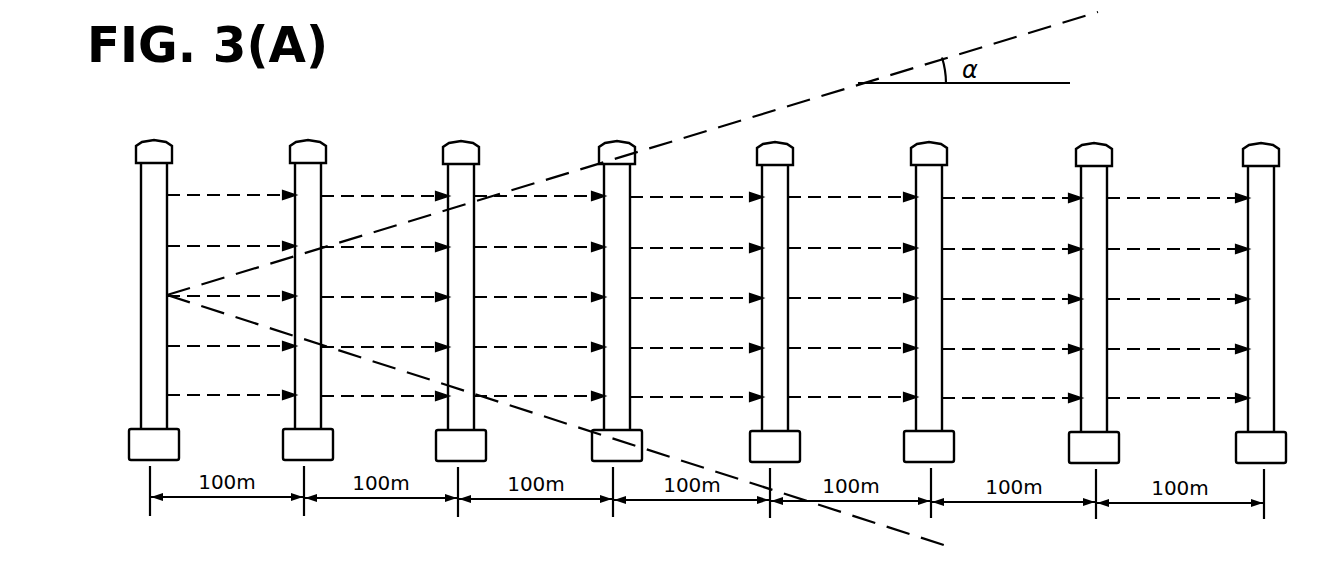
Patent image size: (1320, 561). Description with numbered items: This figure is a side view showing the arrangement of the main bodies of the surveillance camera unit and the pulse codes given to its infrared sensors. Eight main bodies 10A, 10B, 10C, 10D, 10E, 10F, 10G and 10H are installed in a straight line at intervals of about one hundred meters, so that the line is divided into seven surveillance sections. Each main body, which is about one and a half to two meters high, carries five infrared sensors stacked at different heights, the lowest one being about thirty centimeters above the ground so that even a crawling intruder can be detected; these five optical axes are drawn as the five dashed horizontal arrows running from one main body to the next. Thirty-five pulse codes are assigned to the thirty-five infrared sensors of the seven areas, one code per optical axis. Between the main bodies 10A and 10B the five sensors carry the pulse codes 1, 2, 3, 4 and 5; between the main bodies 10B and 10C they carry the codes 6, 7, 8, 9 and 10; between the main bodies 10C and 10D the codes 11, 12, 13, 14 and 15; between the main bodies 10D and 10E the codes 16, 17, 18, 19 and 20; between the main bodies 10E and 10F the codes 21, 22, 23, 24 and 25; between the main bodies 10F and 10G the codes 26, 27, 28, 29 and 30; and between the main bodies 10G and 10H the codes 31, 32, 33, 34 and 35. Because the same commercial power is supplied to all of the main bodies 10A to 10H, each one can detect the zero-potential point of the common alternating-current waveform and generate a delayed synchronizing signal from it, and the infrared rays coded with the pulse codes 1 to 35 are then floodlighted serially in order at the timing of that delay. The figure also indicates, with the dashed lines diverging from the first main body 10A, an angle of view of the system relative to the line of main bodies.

The main body 10A is at (158, 141).
The main body 10B is at (312, 141).
The main body 10C is at (465, 142).
The main body 10D is at (621, 142).
The main body 10E is at (779, 144).
The main body 10F is at (933, 143).
The main body 10G is at (1098, 144).
The main body 10H is at (1265, 144).
The pulse code 1 is at (231, 184).
The pulse code 2 is at (231, 235).
The pulse code 3 is at (231, 285).
The pulse code 4 is at (231, 335).
The pulse code 5 is at (231, 384).
The pulse code 6 is at (384, 185).
The pulse code 7 is at (384, 236).
The pulse code 8 is at (384, 286).
The pulse code 9 is at (384, 336).
The pulse code 10 is at (384, 385).
The pulse code 11 is at (539, 185).
The pulse code 12 is at (539, 236).
The pulse code 13 is at (539, 286).
The pulse code 14 is at (539, 336).
The pulse code 15 is at (539, 385).
The pulse code 16 is at (696, 186).
The pulse code 17 is at (696, 237).
The pulse code 18 is at (696, 287).
The pulse code 19 is at (696, 337).
The pulse code 20 is at (696, 386).
The pulse code 21 is at (852, 186).
The pulse code 22 is at (852, 237).
The pulse code 23 is at (852, 287).
The pulse code 24 is at (852, 337).
The pulse code 25 is at (852, 386).
The pulse code 26 is at (1011, 187).
The pulse code 27 is at (1011, 238).
The pulse code 28 is at (1011, 288).
The pulse code 29 is at (1011, 338).
The pulse code 30 is at (1011, 387).
The pulse code 31 is at (1177, 187).
The pulse code 32 is at (1177, 238).
The pulse code 33 is at (1177, 288).
The pulse code 34 is at (1177, 338).
The pulse code 35 is at (1177, 387).